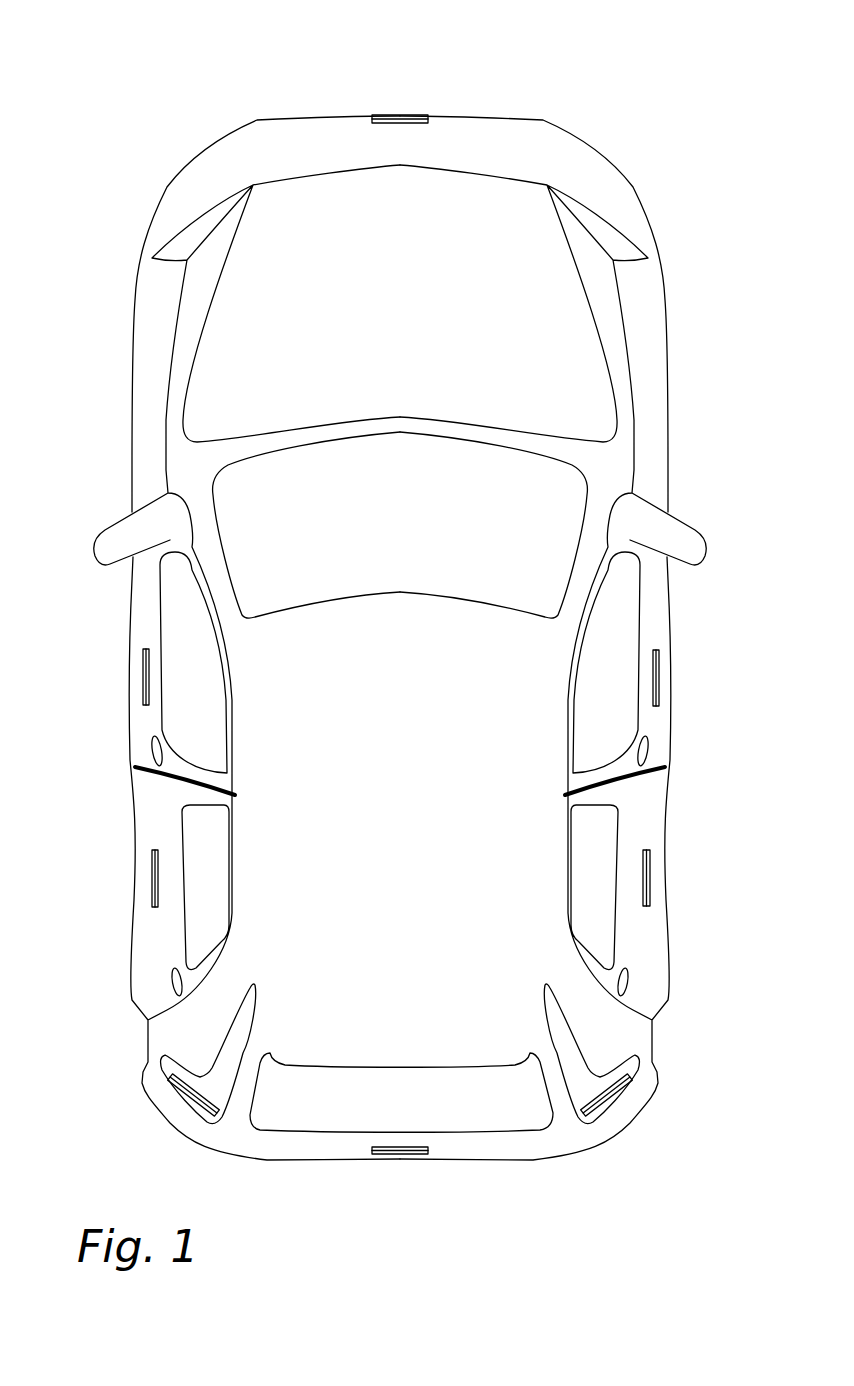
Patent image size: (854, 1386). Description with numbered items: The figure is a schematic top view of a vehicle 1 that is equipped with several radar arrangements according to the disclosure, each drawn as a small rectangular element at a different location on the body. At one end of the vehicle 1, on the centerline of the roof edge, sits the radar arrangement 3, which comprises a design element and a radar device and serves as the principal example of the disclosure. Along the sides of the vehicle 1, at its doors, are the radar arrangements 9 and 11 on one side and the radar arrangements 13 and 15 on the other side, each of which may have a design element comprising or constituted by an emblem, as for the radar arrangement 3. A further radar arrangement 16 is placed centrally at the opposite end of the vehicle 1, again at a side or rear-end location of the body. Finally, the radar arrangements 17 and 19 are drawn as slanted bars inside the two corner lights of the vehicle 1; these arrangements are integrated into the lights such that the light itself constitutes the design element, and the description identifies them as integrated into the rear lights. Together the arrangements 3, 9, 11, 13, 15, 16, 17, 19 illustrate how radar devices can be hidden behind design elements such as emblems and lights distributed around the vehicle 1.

The vehicle 1 is at (103, 89).
The radar arrangement 3 is at (402, 114).
The radar arrangement 9 is at (147, 678).
The radar arrangement 11 is at (156, 880).
The radar arrangement 13 is at (660, 678).
The radar arrangement 15 is at (650, 878).
The radar arrangement 16 is at (400, 1154).
The radar arrangement 17 is at (167, 1101).
The radar arrangement 19 is at (634, 1101).